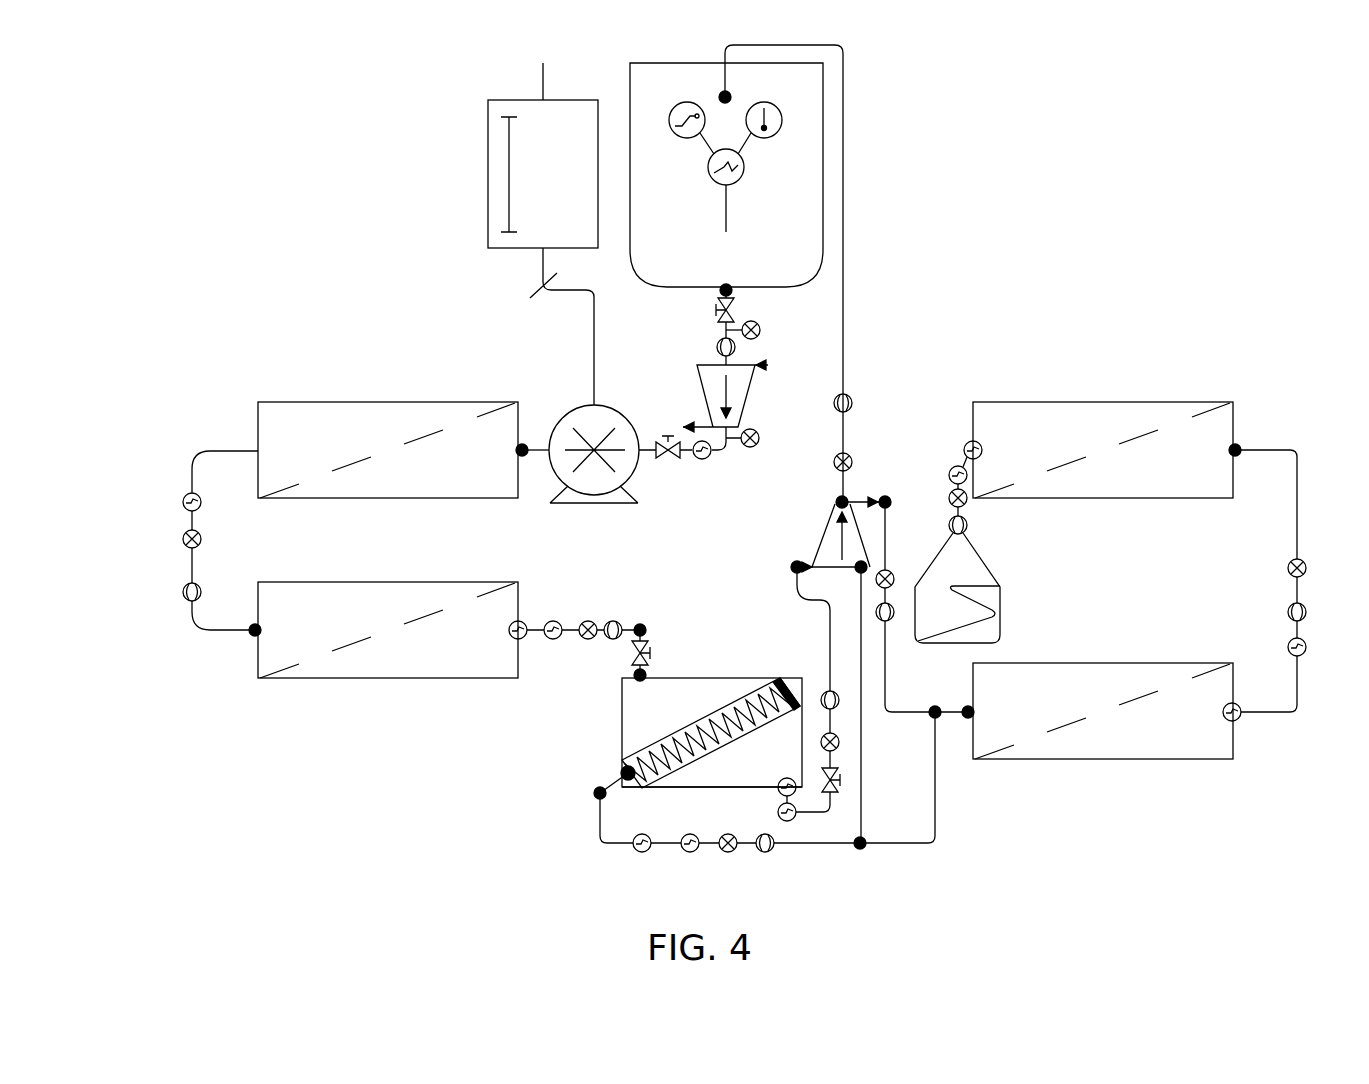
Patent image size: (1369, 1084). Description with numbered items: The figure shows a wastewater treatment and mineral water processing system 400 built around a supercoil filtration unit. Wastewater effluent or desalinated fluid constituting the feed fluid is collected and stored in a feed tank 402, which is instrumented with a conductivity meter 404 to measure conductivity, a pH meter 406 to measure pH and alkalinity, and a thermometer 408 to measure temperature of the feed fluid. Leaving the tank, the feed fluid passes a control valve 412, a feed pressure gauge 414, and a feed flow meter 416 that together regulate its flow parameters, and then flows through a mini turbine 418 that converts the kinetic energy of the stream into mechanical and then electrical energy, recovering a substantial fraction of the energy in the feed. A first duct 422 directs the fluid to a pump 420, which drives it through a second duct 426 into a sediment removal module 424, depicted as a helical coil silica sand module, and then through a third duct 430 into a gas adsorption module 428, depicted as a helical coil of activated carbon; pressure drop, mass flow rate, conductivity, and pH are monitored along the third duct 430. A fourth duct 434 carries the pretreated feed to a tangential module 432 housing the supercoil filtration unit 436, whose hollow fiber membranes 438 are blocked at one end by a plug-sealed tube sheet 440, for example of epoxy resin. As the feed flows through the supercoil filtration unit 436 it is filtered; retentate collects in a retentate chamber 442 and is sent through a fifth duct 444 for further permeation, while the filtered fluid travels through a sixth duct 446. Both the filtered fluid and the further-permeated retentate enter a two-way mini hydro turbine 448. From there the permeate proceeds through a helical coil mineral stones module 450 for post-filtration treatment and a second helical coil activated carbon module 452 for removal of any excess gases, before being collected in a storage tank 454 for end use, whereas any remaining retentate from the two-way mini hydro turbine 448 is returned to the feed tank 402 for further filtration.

The wastewater treatment and mineral water processing system 400 is at (228, 103).
The feed tank 402 is at (823, 78).
The conductivity meter 404 is at (745, 167).
The pH meter 406 is at (668, 121).
The thermometer 408 is at (783, 118).
The control valve 412 is at (716, 306).
The feed pressure gauge 414 is at (760, 326).
The feed flow meter 416 is at (716, 347).
The mini turbine 418 is at (735, 375).
The pump 420 is at (565, 406).
The first duct 422 is at (712, 456).
The sediment removal module 424 is at (305, 401).
The second duct 426 is at (525, 457).
The gas adsorption module 428 is at (388, 679).
The third duct 430 is at (192, 570).
The tangential module 432 is at (750, 677).
The fourth duct 434 is at (578, 628).
The supercoil filtration unit 436 is at (648, 747).
The hollow fiber membranes 438 is at (690, 705).
The plug-sealed tube sheet 440 is at (795, 690).
The retentate chamber 442 is at (696, 787).
The fifth duct 444 is at (801, 821).
The sixth duct 446 is at (600, 818).
The two-way mini hydro turbine 448 is at (818, 520).
The helical coil mineral stones module 450 is at (1165, 662).
The second helical coil activated carbon module 452 is at (1100, 401).
The storage tank 454 is at (1001, 590).